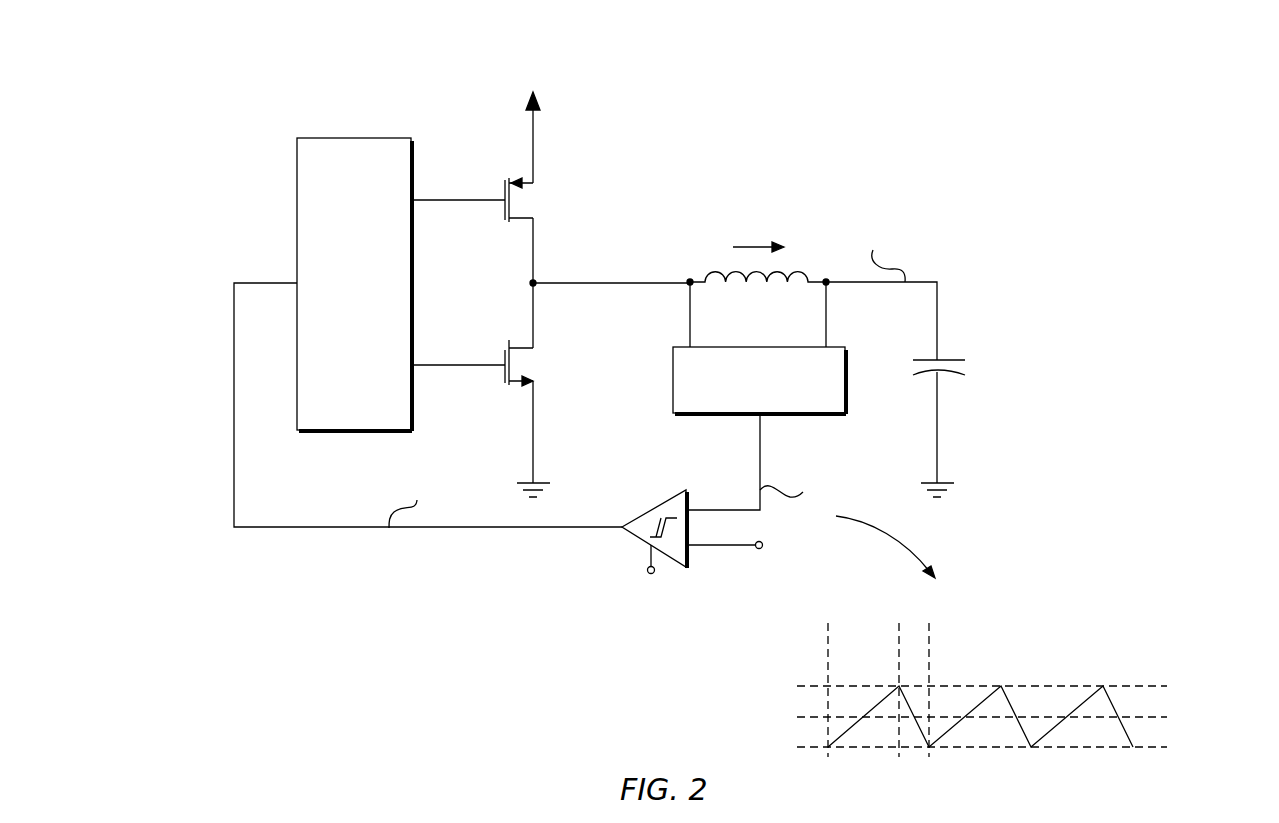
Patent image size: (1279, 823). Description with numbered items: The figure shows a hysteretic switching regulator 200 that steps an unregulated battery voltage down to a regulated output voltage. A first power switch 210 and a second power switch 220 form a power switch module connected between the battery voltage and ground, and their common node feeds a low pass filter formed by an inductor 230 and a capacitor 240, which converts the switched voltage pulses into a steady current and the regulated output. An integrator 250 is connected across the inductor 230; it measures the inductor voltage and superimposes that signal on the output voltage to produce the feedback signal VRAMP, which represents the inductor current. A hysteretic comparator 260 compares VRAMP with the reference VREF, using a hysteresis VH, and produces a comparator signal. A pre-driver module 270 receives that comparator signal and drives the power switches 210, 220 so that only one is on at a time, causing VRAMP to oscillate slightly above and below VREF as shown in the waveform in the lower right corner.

The hysteretic switching regulator 200 is at (342, 697).
The first power switch 210 is at (527, 183).
The second power switch 220 is at (528, 348).
The inductor 230 is at (758, 290).
The capacitor 240 is at (919, 367).
The integrator 250 is at (759, 380).
The hysteretic comparator 260 is at (661, 500).
The pre-driver module 270 is at (401, 284).